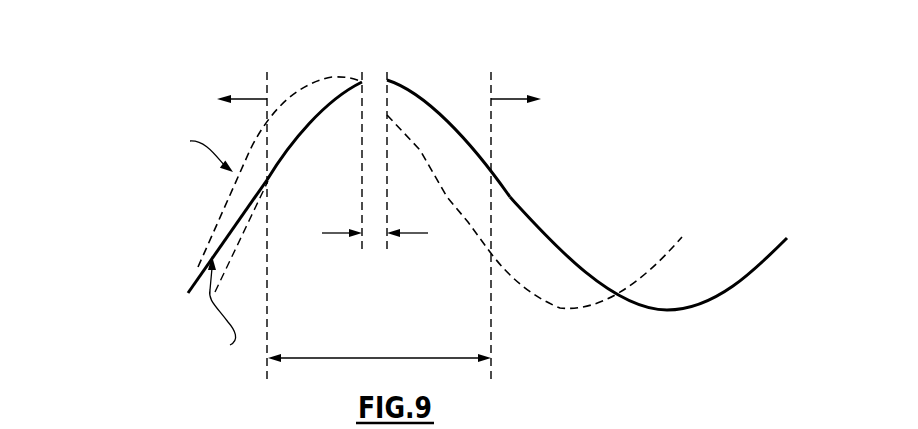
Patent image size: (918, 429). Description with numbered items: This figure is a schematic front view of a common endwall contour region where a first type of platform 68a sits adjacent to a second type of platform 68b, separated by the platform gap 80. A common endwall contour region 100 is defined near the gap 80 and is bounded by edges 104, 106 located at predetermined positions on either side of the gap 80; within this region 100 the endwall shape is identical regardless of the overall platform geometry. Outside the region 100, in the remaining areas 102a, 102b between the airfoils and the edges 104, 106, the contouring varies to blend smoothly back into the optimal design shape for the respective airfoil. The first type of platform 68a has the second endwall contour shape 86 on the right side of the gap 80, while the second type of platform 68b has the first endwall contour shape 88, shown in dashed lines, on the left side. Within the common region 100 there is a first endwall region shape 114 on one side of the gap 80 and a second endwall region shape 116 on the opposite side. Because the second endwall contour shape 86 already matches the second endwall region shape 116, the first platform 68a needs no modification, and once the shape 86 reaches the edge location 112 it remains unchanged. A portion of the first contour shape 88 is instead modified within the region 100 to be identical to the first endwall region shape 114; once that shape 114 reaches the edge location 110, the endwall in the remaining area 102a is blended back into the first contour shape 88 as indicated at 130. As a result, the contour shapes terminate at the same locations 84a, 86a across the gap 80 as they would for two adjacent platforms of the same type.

The first type of platform 68a is at (638, 230).
The second type of platform 68b is at (172, 189).
The platform gap 80 is at (375, 201).
The termination location 84a is at (352, 75).
The second endwall contour shape 86 is at (522, 209).
The termination location 86a is at (394, 74).
The first endwall contour shape 88 is at (225, 199).
The common endwall contour region 100 is at (384, 358).
The remaining area 102a is at (249, 99).
The remaining area 102b is at (506, 99).
The edge of common region 104 is at (267, 83).
The edge of common region 106 is at (492, 90).
The edge location 110 is at (268, 181).
The edge location 112 is at (490, 168).
The first endwall region shape 114 is at (306, 125).
The second endwall region shape 116 is at (440, 115).
The blended transition 130 is at (218, 250).